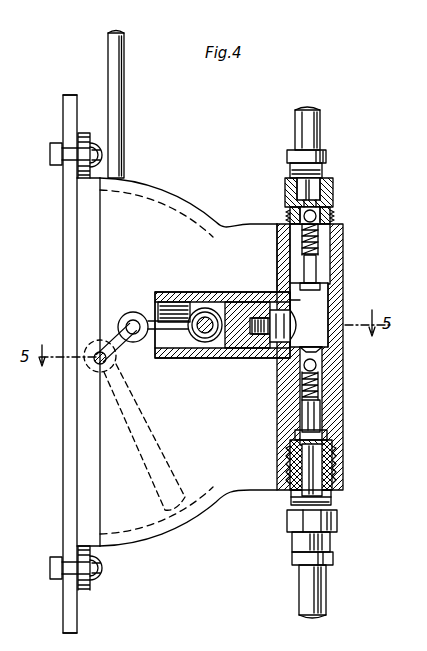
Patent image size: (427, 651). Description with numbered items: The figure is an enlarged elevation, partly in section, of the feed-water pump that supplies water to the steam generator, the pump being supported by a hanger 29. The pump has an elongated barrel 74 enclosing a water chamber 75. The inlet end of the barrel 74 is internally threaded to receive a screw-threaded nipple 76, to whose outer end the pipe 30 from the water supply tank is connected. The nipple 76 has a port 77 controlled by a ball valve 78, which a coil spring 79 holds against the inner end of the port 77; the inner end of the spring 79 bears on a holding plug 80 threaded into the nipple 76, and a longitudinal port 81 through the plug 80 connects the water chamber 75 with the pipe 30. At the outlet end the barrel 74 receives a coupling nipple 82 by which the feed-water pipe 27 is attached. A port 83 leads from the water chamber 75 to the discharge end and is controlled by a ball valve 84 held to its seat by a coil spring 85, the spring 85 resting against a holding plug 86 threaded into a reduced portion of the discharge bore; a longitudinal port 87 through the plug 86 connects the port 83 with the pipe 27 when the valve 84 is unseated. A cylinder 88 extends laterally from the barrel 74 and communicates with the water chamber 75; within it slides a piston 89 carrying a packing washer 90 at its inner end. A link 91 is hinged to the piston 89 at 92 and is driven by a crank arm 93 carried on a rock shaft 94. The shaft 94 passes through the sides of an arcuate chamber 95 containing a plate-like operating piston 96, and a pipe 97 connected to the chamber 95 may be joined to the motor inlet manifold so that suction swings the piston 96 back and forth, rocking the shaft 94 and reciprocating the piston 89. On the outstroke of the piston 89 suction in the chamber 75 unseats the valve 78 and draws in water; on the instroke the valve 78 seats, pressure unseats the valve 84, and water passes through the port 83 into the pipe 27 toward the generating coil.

The feed-water pipe 27 is at (327, 575).
The hanger 29 is at (66, 241).
The pipe 30 is at (320, 128).
The elongated barrel 74 is at (332, 298).
The water chamber 75 is at (320, 296).
The screw-threaded nipple 76 is at (330, 205).
The port 77 is at (290, 199).
The ball valve 78 is at (328, 212).
The coil spring 79 is at (303, 217).
The holding plug 80 is at (342, 240).
The longitudinal port 81 is at (328, 266).
The coupling nipple 82 is at (336, 468).
The port 83 is at (322, 357).
The ball valve 84 is at (325, 380).
The coil spring 85 is at (325, 395).
The holding plug 86 is at (322, 415).
The longitudinal port 87 is at (328, 435).
The cylinder 88 is at (232, 358).
The piston 89 is at (237, 302).
The packing washer 90 is at (274, 290).
The link 91 is at (163, 302).
The hinge 92 is at (188, 302).
The crank arm 93 is at (136, 342).
The rock shaft 94 is at (88, 348).
The arcuate chamber 95 is at (190, 203).
The operating piston 96 is at (167, 506).
The pipe 97 is at (123, 114).